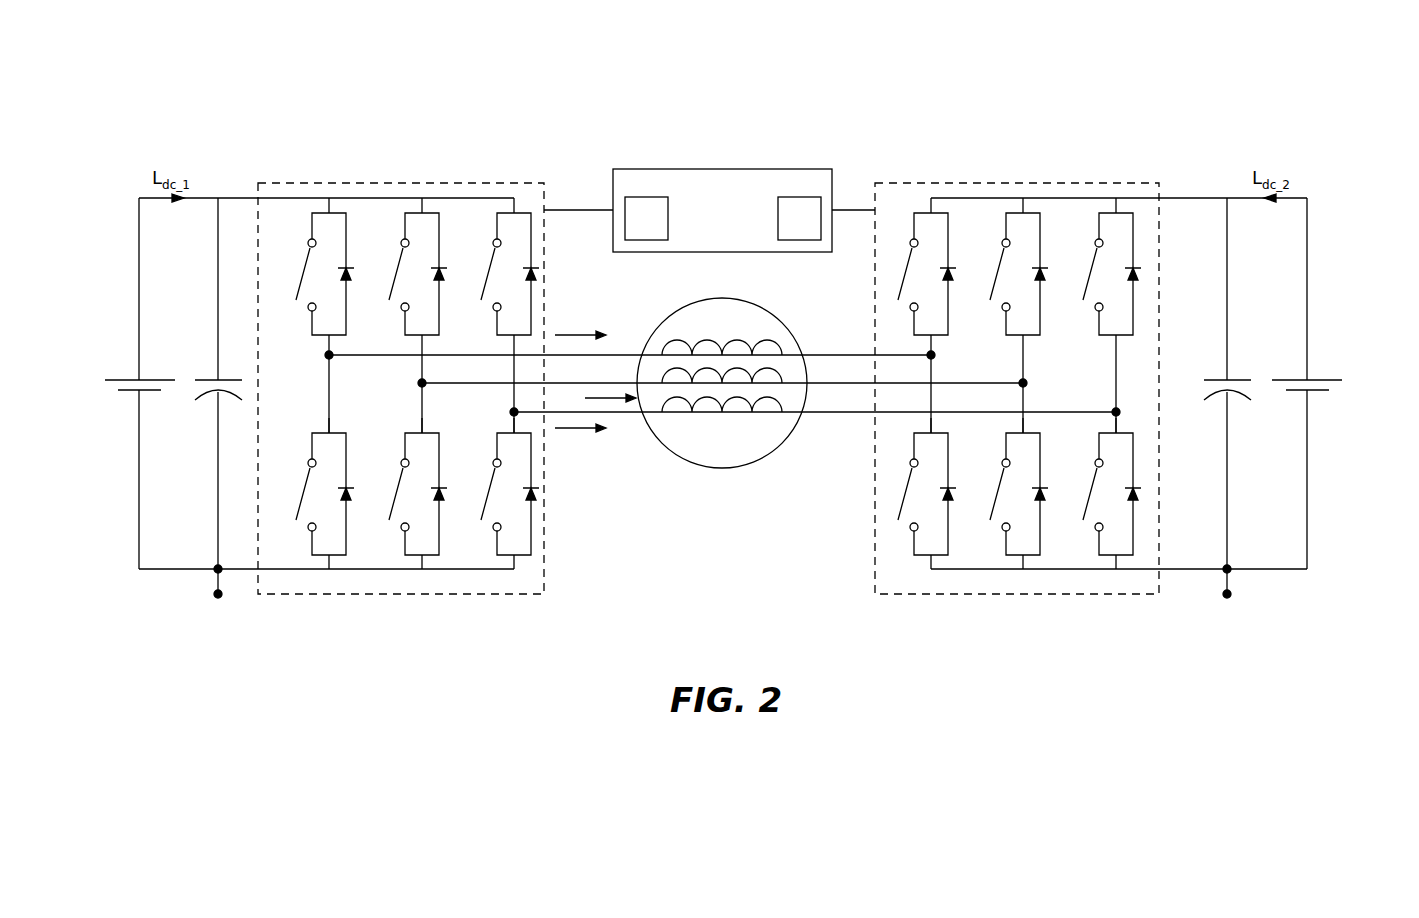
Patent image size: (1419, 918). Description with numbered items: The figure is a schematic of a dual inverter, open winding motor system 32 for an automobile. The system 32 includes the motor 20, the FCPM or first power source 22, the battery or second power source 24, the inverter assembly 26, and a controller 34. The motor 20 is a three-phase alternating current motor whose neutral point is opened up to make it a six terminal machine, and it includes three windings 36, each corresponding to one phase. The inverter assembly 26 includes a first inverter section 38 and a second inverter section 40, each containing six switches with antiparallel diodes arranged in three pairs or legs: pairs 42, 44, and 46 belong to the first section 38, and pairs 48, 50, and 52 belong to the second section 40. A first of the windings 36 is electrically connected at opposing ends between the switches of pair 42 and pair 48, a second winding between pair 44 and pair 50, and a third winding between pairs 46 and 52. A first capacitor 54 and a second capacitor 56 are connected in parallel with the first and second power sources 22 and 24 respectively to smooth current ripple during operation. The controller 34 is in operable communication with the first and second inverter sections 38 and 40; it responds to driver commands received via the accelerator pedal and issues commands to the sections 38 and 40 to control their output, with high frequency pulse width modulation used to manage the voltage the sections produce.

The motor 20 is at (722, 385).
The FCPM (first voltage or power source) 22 is at (121, 372).
The battery (second voltage or power source) 24 is at (1322, 372).
The inverter assembly 26 is at (413, 168).
The dual inverter, open winding motor system 32 is at (1316, 60).
The controller 34 is at (740, 201).
The windings (coils) 36 is at (740, 400).
The first inverter section 38 is at (297, 182).
The second inverter section 40 is at (1140, 182).
The switch pair 42 is at (329, 575).
The switch pair 44 is at (422, 575).
The switch pair 46 is at (514, 575).
The switch pair 48 is at (931, 575).
The switch pair 50 is at (1023, 575).
The switch pair 52 is at (1116, 575).
The first capacitor 54 is at (208, 400).
The second capacitor 56 is at (1237, 400).